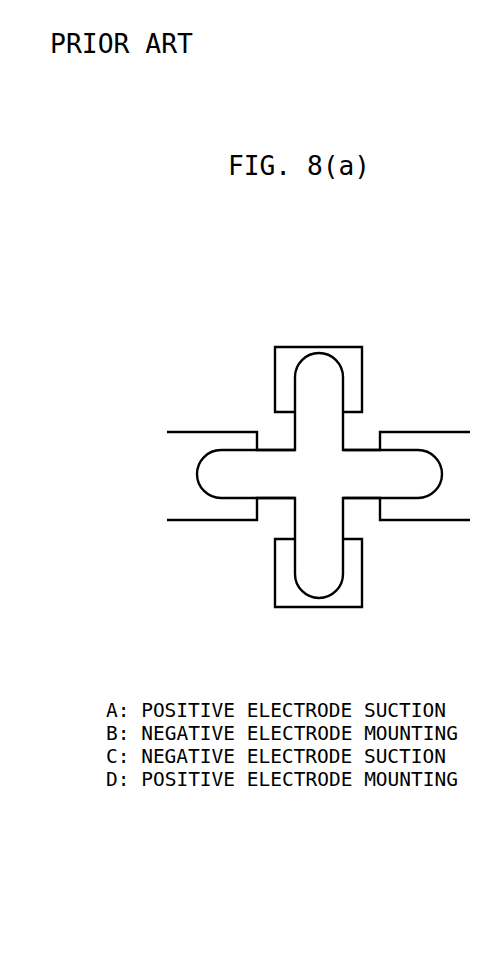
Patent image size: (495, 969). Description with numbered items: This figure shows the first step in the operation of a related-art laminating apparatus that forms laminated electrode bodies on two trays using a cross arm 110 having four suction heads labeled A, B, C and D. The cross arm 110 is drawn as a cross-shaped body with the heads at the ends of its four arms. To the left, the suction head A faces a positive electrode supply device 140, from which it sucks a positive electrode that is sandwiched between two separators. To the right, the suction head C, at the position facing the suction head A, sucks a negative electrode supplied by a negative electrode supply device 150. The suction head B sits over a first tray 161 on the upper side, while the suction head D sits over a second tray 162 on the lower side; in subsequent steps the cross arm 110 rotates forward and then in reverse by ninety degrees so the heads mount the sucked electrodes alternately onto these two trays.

The cross arm 110 is at (359, 452).
The positive electrode supply device 140 is at (220, 432).
The negative electrode supply device 150 is at (445, 521).
The first tray 161 is at (337, 347).
The second tray 162 is at (275, 576).